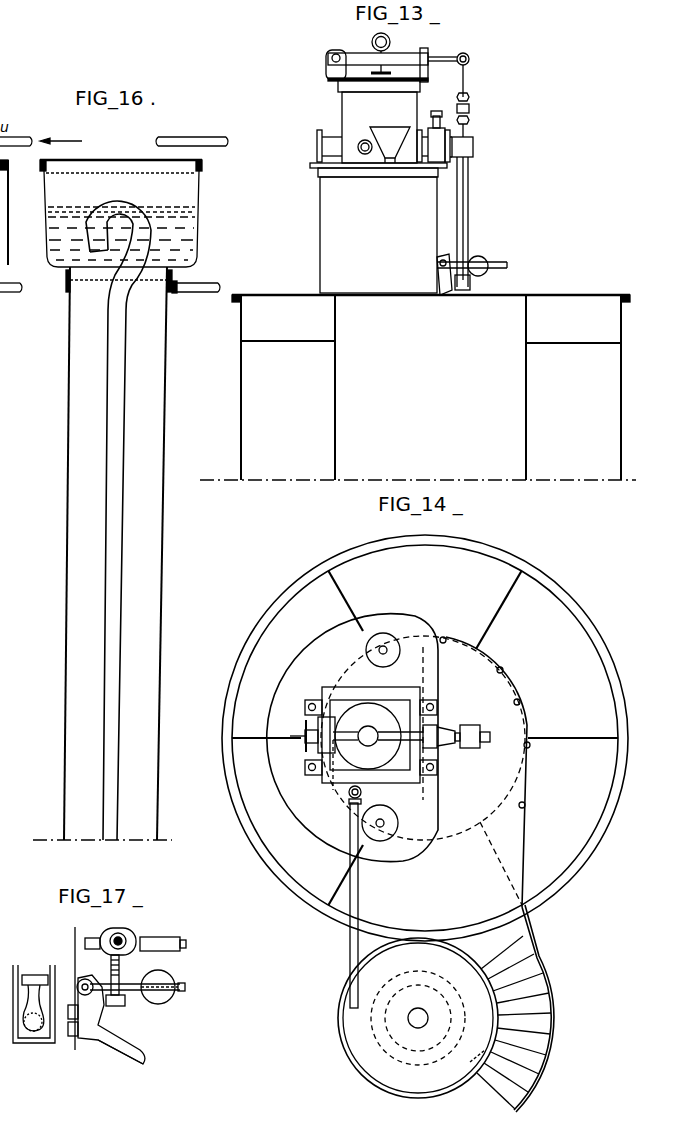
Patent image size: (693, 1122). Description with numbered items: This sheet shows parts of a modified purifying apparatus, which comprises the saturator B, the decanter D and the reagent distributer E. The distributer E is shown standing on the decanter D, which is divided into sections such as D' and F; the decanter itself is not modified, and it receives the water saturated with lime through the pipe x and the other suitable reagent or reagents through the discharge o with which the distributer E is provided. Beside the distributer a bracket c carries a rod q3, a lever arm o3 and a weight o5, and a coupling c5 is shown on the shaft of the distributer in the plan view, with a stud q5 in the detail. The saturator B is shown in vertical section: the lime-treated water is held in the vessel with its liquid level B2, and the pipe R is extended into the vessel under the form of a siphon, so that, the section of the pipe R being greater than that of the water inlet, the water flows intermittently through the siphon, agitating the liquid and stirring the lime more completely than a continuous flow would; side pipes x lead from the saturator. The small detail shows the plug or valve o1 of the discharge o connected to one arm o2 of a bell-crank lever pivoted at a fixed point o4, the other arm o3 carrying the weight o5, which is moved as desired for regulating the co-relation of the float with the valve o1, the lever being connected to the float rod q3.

In FIG. 13, the reagent distributer E is at (391, 163).
In FIG. 14, the reagent distributer E is at (352, 738).
In FIG. 13, the decanter D is at (418, 388).
In FIG. 14, the decanter D is at (425, 738).
In FIG. 13, the cabinet central section / wheel cover D' is at (430, 388).
In FIG. 14, the cabinet central section / wheel cover D' is at (437, 874).
In FIG. 13, the compartment F is at (573, 331).
In FIG. 13, the bracket c is at (437, 285).
In FIG. 13, the vertical rod q3 is at (468, 233).
In FIG. 17, the vertical rod q3 is at (130, 940).
In FIG. 13, the arm of bell-crank lever o3 is at (488, 274).
In FIG. 17, the arm of bell-crank lever o3 is at (132, 975).
In FIG. 13, the weight o5 is at (486, 258).
In FIG. 17, the weight o5 is at (159, 987).
In FIG. 16, the saturator B is at (102, 553).
In FIG. 16, the bowl B2 is at (183, 212).
In FIG. 16, the tube or vertical canal R is at (118, 520).
In FIG. 16, the pipe x is at (114, 207).
In FIG. 17, the threaded stud q5 is at (108, 962).
In FIG. 17, the fixed pivot point o4 is at (85, 971).
In FIG. 17, the valve o1 is at (100, 1022).
In FIG. 17, the arm of bell-crank lever o2 is at (73, 1000).
In FIG. 17, the discharge o is at (60, 1040).
In FIG. 14, the coupling c5 is at (470, 728).